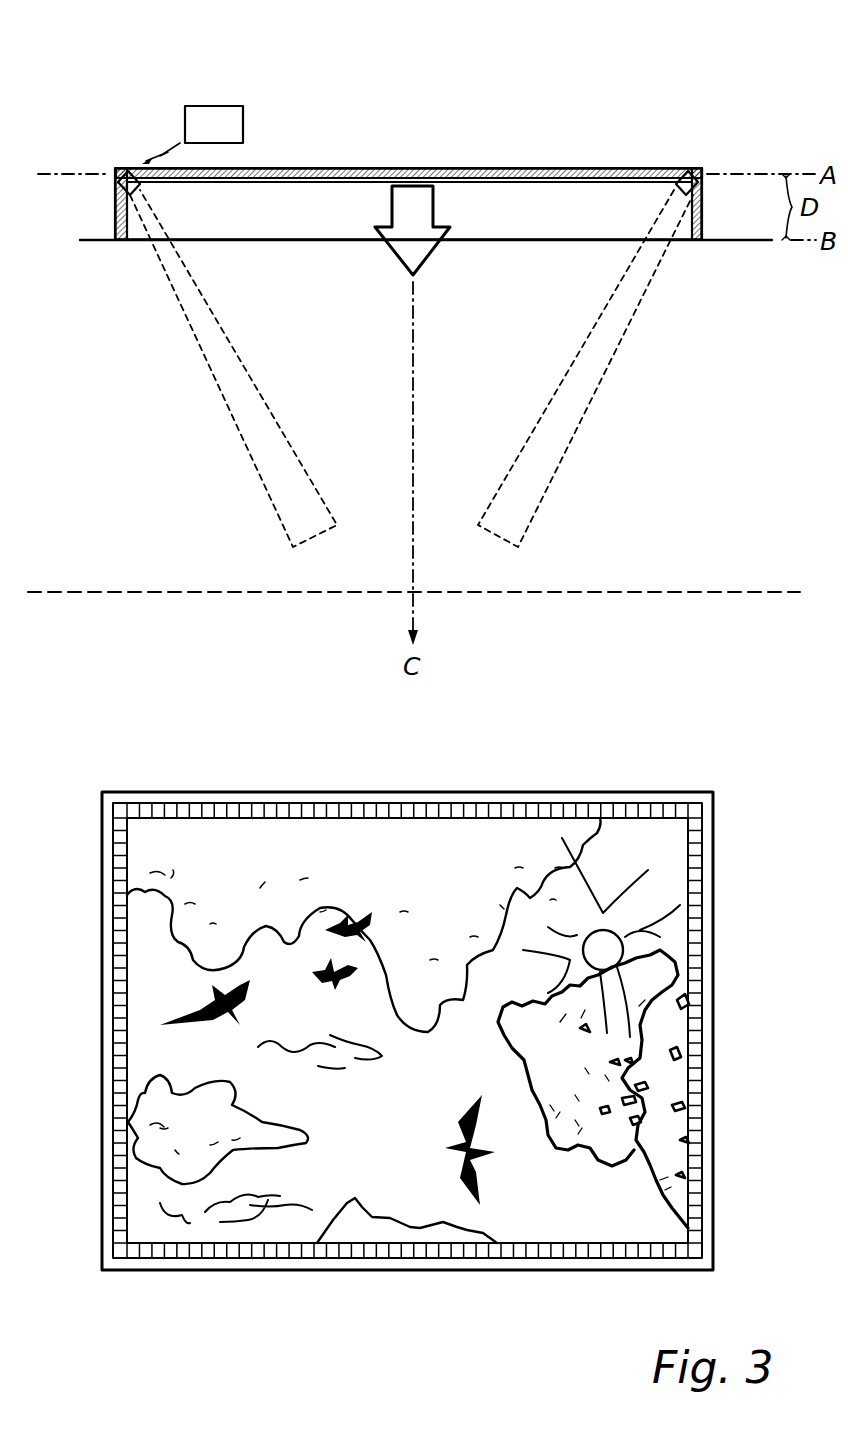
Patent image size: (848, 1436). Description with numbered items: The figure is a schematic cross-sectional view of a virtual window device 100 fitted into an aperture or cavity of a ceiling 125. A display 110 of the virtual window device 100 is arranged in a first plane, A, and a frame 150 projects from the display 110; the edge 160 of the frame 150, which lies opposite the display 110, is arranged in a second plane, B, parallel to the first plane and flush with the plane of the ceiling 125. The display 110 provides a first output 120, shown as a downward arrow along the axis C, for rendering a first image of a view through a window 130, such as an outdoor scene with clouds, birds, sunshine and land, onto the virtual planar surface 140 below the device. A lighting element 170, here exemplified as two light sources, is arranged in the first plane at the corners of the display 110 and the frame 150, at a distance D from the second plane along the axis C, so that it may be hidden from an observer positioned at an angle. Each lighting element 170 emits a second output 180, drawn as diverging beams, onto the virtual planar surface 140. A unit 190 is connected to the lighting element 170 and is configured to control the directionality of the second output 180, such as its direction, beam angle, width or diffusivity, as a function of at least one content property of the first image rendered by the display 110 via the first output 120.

The virtual window device 100 is at (629, 106).
The display 110 is at (416, 167).
The first output 120 is at (395, 250).
The ceiling 125 is at (93, 243).
The view through a window 130 is at (677, 848).
The virtual planar surface 140 is at (733, 590).
The frame 150 is at (703, 207).
The edge 160 is at (692, 242).
The lighting element 170 is at (128, 172).
The second output 180 is at (272, 417).
The unit 190 is at (218, 106).